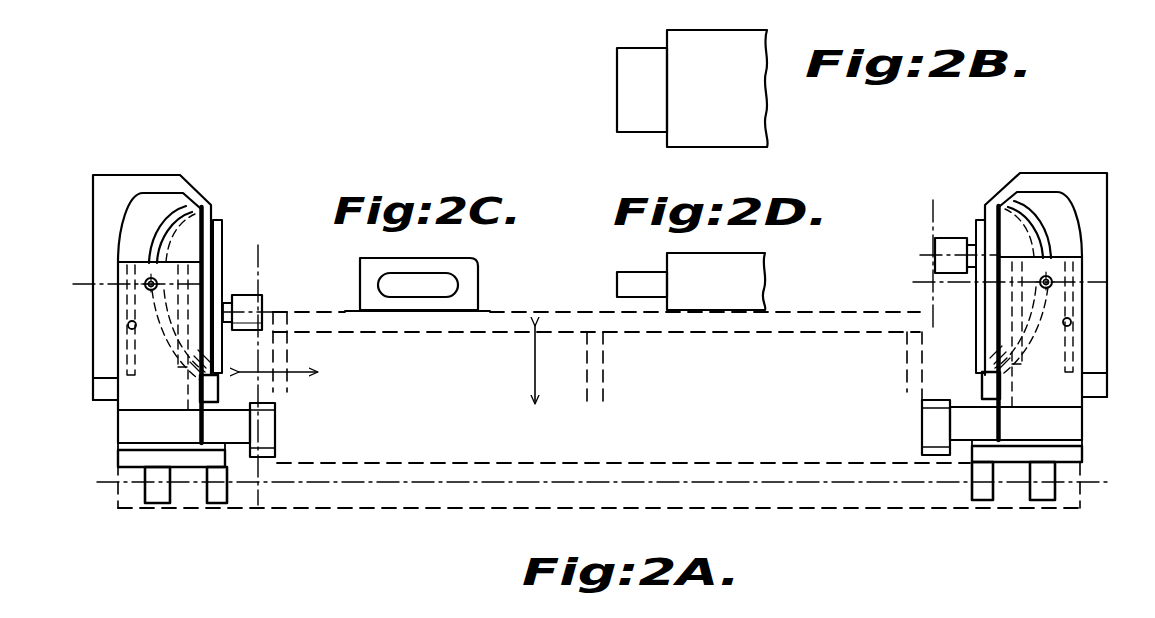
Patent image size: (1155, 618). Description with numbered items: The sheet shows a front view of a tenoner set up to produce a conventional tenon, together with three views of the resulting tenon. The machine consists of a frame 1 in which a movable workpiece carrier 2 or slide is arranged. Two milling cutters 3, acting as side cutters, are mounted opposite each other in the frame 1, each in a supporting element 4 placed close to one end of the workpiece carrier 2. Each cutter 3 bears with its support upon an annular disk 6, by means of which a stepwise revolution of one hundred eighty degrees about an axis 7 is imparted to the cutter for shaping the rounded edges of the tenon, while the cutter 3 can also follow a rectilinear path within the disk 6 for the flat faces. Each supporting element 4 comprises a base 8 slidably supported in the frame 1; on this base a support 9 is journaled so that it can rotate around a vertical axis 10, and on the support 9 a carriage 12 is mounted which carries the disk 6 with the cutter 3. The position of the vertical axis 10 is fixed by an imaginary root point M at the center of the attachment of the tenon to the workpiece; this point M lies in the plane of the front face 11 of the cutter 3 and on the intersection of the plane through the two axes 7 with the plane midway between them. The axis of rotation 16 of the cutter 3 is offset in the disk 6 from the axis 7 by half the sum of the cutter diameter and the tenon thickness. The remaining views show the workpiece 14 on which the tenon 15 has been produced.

In FIG. 2A, the frame 1 is at (183, 507).
In FIG. 2A, the workpiece carrier 2 is at (498, 313).
In FIG. 2A, the milling cutter 3 is at (261, 301).
In FIG. 2A, the supporting element 4 is at (211, 187).
In FIG. 2A, the annular disk 6 is at (222, 238).
In FIG. 2A, the axis 7 is at (81, 283).
In FIG. 2A, the base 8 is at (136, 458).
In FIG. 2A, the support 9 is at (128, 428).
In FIG. 2A, the vertical axis 10 is at (266, 404).
In FIG. 2A, the front face 11 is at (270, 307).
In FIG. 2A, the carriage 12 is at (115, 216).
In FIG. 2B, the workpiece 14 is at (757, 115).
In FIG. 2C, the workpiece 14 is at (469, 272).
In FIG. 2D, the workpiece 14 is at (763, 275).
In FIG. 2B, the tenon 15 is at (630, 85).
In FIG. 2C, the tenon 15 is at (418, 273).
In FIG. 2D, the tenon 15 is at (632, 279).
In FIG. 2A, the axis of rotation 16 is at (241, 326).
In FIG. 2A, the point of intersection M is at (265, 279).